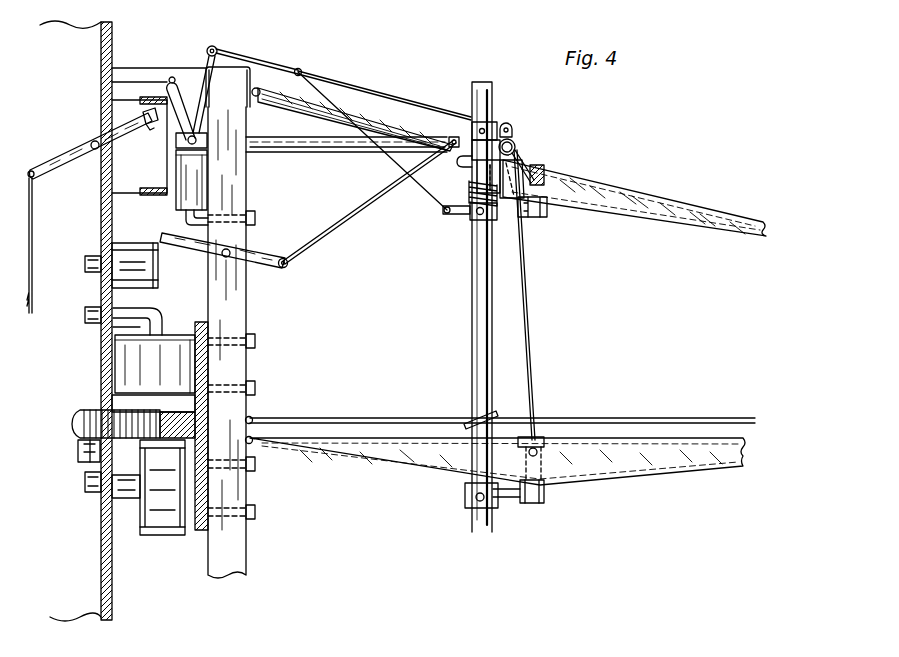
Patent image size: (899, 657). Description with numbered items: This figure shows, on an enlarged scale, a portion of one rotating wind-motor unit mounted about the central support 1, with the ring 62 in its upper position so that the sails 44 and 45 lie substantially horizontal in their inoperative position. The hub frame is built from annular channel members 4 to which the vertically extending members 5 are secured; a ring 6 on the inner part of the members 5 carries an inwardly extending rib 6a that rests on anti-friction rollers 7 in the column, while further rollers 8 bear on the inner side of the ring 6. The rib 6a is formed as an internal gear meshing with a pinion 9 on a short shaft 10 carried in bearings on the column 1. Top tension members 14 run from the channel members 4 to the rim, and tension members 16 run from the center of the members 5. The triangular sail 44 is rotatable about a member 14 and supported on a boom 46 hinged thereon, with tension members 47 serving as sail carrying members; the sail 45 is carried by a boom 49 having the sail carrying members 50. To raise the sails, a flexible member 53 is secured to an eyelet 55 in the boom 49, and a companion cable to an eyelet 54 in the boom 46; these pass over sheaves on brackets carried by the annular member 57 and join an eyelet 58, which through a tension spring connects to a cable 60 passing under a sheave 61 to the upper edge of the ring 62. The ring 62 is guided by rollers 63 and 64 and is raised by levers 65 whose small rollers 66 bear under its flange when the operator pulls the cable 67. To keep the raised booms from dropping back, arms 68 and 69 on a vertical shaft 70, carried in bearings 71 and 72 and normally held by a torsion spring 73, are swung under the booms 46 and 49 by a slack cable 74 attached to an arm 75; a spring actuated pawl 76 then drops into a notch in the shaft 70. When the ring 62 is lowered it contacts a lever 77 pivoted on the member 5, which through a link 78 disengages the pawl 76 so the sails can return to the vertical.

The central support 1 is at (108, 592).
The annular channel members 4 is at (241, 68).
The vertically extending members 5 is at (232, 292).
The ring 6 is at (208, 487).
The inwardly extending rib 6a is at (255, 438).
The anti-friction rollers 7 is at (163, 517).
The anti-friction rollers 8 is at (137, 364).
The pinion 9 is at (90, 422).
The short shaft 10 is at (94, 463).
The top tension members 14 is at (692, 210).
The tension members 16 is at (355, 415).
The sail 44 is at (632, 206).
The sail 45 is at (650, 465).
The boom 46 is at (523, 223).
The tension members 47 is at (337, 122).
The boom 49 is at (532, 506).
The sail carrying members 50 is at (387, 465).
The flexible member 53 is at (531, 304).
The eyelet 54 is at (548, 172).
The eyelet 55 is at (545, 440).
The annular member 57 is at (279, 150).
The eyelet 58 is at (306, 68).
The flexible member 60 is at (284, 65).
The sheave 61 is at (193, 128).
The ring 62 is at (161, 103).
The anti-friction rollers 63 is at (127, 258).
The anti-friction rollers 64 is at (197, 186).
The levers 65 is at (61, 156).
The small rollers 66 is at (152, 128).
The flexible member 67 is at (33, 218).
The arm 68 is at (549, 218).
The arm 69 is at (549, 502).
The vertical shaft 70 is at (471, 347).
The bearing 71 is at (469, 125).
The bearing 72 is at (506, 402).
The torsion spring 73 is at (443, 211).
The cable 74 is at (380, 210).
The arm 75 is at (457, 218).
The spring actuated pawl 76 is at (450, 149).
The lever 77 is at (268, 254).
The link 78 is at (343, 218).